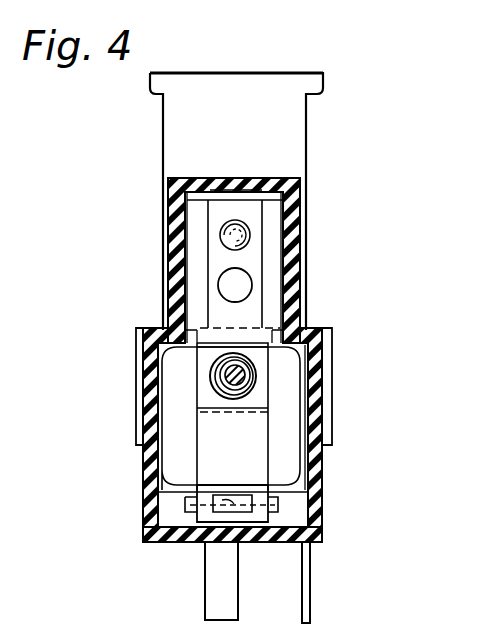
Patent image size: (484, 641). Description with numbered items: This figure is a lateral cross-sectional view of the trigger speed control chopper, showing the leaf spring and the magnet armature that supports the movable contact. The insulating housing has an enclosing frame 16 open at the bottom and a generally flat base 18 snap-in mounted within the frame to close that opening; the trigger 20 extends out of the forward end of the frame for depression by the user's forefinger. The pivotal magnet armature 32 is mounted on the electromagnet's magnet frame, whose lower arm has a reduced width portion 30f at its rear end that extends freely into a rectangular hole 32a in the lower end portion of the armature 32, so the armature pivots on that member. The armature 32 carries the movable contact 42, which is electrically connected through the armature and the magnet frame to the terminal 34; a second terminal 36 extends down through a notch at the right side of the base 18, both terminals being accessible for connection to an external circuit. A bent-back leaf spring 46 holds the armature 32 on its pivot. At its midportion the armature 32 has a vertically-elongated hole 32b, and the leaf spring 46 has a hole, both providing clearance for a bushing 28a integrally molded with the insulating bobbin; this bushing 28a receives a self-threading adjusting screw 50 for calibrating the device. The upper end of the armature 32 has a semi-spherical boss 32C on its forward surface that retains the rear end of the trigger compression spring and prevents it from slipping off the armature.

The enclosing frame 16 is at (168, 250).
The base 18 is at (280, 542).
The trigger 20 is at (185, 124).
The bushing 28a is at (240, 362).
The reduced width portion 30f is at (266, 503).
The magnet armature 32 is at (258, 312).
The rectangular hole 32a is at (210, 528).
The vertically-elongated hole 32b is at (242, 378).
The semi-spherical boss 32C is at (242, 232).
The terminal 34 is at (215, 595).
The terminal 36 is at (310, 592).
The movable contact 42 is at (242, 291).
The leaf spring 46 is at (250, 440).
The adjusting screw 50 is at (235, 375).